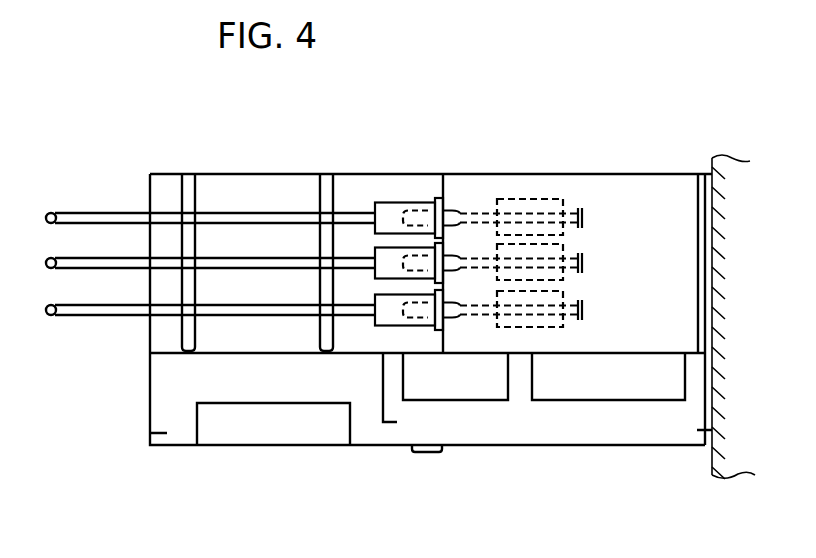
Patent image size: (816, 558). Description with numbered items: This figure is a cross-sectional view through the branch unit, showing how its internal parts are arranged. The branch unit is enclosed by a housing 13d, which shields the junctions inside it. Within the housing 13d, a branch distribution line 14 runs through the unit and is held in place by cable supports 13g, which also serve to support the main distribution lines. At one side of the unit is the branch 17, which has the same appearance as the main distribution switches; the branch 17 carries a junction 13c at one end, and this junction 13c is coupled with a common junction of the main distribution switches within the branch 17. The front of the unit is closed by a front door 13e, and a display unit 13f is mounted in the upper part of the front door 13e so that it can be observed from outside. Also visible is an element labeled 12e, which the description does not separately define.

The branch distribution line 14 is at (92, 213).
The cable supports 13g is at (199, 193).
The housing 13d is at (272, 173).
The junction 13c is at (410, 198).
The branch 17 is at (627, 173).
The front door 13e is at (382, 447).
The display unit 13f is at (247, 428).
The support block 12e is at (595, 400).